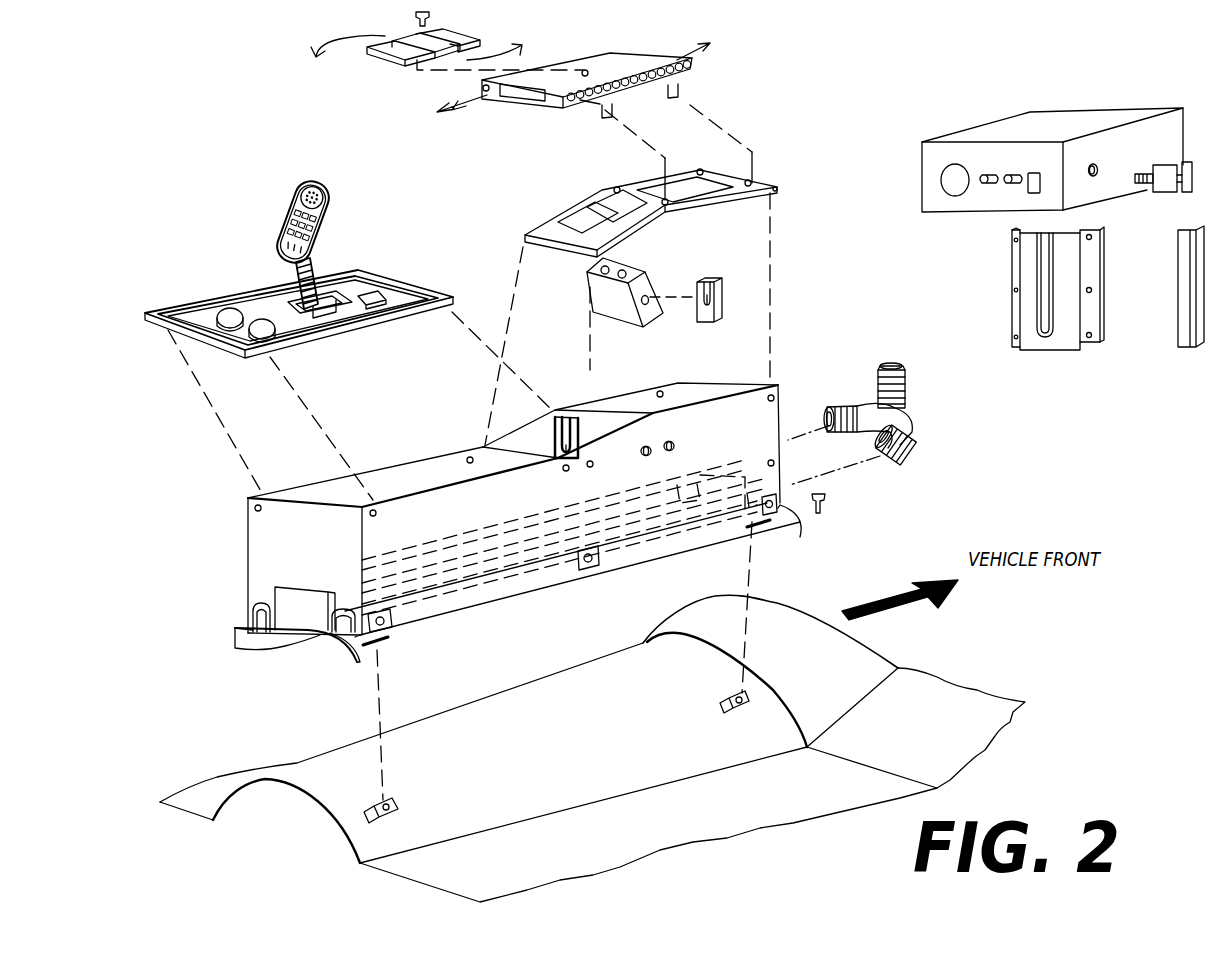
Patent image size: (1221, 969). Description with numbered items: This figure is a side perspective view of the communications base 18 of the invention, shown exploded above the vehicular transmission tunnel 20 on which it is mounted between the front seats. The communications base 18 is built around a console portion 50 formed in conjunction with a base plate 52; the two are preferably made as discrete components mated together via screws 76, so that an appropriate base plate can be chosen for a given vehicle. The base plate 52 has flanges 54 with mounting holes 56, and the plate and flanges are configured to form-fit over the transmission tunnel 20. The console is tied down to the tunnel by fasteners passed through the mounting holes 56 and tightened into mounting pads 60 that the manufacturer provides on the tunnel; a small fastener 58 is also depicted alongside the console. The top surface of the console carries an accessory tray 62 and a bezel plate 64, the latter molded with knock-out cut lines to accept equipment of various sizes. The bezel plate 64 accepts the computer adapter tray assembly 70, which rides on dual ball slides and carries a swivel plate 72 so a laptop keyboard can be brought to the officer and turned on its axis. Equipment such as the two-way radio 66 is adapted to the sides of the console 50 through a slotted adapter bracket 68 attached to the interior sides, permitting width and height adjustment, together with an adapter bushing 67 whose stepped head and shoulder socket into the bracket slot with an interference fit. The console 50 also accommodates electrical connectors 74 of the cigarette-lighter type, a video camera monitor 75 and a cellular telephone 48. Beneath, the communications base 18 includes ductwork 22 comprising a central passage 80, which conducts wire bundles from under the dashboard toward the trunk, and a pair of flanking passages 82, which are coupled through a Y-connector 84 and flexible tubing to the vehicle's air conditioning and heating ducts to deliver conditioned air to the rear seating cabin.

The communications base 18 is at (226, 575).
The transmission tunnel 20 is at (647, 766).
The ductwork 22 is at (218, 635).
The cellular phone 48 is at (330, 218).
The console portion 50 is at (432, 462).
The base plate 52 is at (470, 612).
The flanges 54 is at (340, 655).
The mounting holes 56 is at (378, 648).
The fastener screw 58 is at (822, 508).
The mounting pads 60 is at (398, 804).
The accessory tray 62 is at (182, 310).
The bezel plate 64 is at (780, 188).
The 2-way radio 66 is at (632, 320).
The adapter bushing 67 is at (1168, 192).
The slotted adapter bracket 68 is at (722, 296).
The computer adapter tray assembly 70 is at (695, 68).
The swivel plate 72 is at (382, 52).
The electrical connectors 74 is at (672, 446).
The video camera monitor 75 is at (380, 292).
The screws 76 is at (400, 630).
The central passage 80 is at (300, 600).
The flanking passages 82 is at (258, 600).
The Y-connector 84 is at (912, 414).